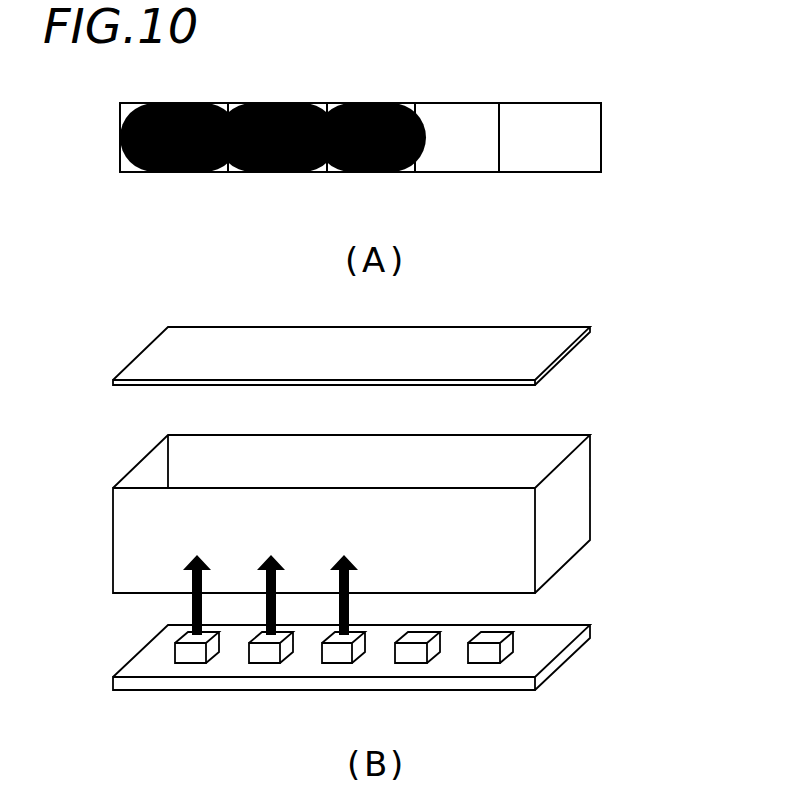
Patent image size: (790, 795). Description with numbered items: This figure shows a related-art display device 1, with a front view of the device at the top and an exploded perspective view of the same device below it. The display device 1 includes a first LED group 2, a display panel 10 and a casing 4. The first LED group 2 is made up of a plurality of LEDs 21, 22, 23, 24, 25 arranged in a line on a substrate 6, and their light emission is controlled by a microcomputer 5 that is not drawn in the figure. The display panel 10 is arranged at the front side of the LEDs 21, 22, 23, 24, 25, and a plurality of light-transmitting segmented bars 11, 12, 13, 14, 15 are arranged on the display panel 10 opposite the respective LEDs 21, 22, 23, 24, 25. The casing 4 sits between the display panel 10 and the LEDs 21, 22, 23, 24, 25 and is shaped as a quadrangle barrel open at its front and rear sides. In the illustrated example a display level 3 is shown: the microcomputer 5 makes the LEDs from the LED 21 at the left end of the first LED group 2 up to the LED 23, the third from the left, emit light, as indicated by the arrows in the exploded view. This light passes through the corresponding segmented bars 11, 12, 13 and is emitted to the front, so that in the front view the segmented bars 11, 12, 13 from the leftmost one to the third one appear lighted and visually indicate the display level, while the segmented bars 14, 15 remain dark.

The display device 1 is at (612, 267).
The first LED group 2 is at (687, 695).
The display level "3" 3 is at (372, 122).
The casing 4 is at (602, 521).
The microcomputer 5 is at (550, 122).
The substrate 6 is at (557, 657).
The display panel 10 is at (588, 133).
The segmented bar 11 is at (125, 173).
The segmented bar 12 is at (236, 173).
The segmented bar 13 is at (330, 173).
The segmented bar 14 is at (458, 165).
The segmented bar 15 is at (541, 165).
The LED 21 is at (193, 656).
The LED 22 is at (267, 656).
The LED 23 is at (340, 656).
The LED 24 is at (413, 656).
The LED 25 is at (486, 656).